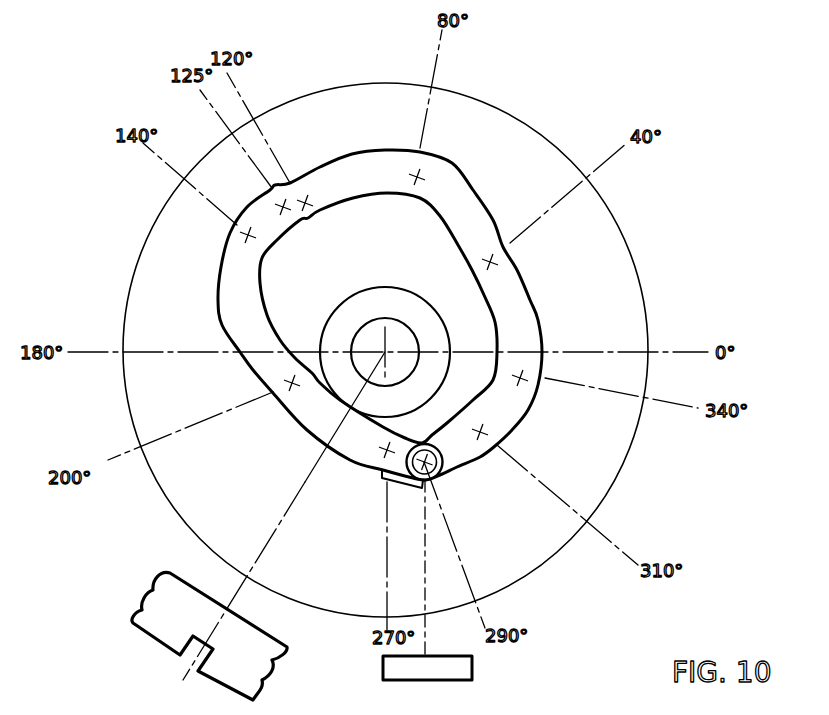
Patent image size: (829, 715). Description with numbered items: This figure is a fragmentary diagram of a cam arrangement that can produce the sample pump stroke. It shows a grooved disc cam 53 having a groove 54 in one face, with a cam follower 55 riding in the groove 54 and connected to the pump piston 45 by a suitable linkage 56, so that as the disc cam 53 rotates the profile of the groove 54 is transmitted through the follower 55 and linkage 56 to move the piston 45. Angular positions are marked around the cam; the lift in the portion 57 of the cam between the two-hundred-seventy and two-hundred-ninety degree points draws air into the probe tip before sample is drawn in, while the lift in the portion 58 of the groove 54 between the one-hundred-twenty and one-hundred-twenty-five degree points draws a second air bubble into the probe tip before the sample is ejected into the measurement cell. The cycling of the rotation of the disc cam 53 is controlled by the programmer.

The pump piston 45 is at (472, 670).
The grooved disc cam 53 is at (617, 220).
The groove 54 is at (540, 320).
The cam follower 55 is at (443, 465).
The linkage 56 is at (428, 636).
The portion of cam between 270° and 290° points 57 is at (407, 484).
The portion of cam groove between 120° and 125° points 58 is at (276, 183).